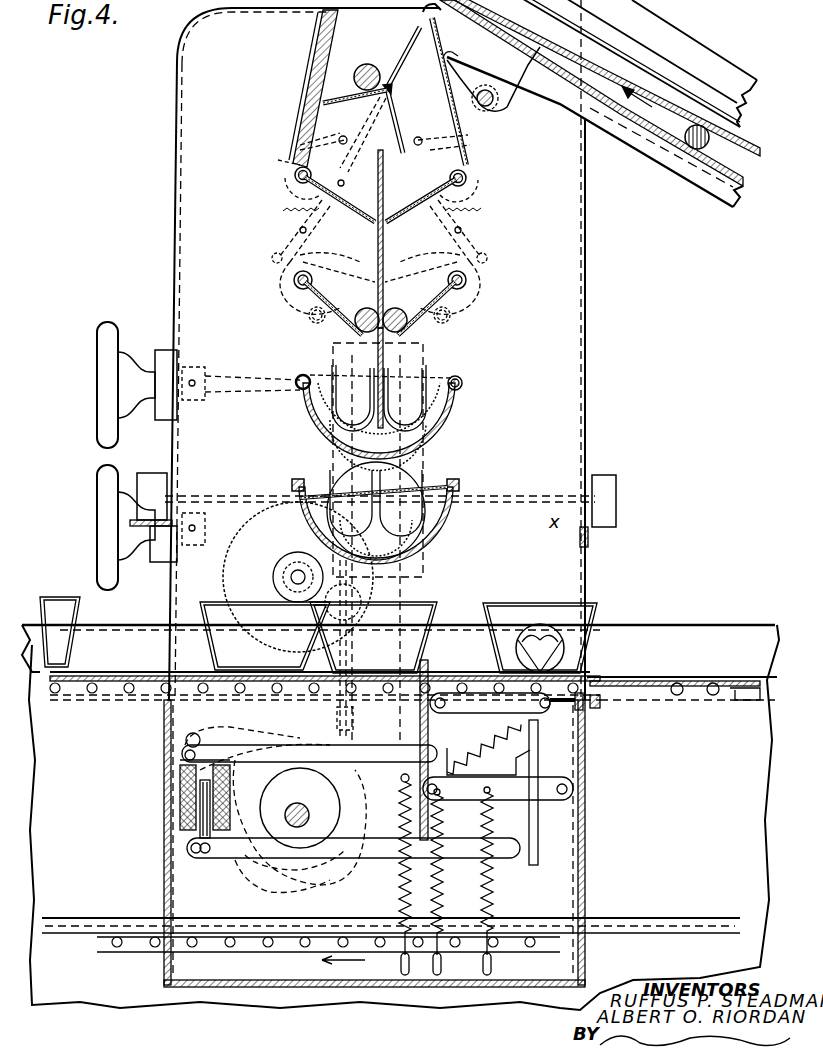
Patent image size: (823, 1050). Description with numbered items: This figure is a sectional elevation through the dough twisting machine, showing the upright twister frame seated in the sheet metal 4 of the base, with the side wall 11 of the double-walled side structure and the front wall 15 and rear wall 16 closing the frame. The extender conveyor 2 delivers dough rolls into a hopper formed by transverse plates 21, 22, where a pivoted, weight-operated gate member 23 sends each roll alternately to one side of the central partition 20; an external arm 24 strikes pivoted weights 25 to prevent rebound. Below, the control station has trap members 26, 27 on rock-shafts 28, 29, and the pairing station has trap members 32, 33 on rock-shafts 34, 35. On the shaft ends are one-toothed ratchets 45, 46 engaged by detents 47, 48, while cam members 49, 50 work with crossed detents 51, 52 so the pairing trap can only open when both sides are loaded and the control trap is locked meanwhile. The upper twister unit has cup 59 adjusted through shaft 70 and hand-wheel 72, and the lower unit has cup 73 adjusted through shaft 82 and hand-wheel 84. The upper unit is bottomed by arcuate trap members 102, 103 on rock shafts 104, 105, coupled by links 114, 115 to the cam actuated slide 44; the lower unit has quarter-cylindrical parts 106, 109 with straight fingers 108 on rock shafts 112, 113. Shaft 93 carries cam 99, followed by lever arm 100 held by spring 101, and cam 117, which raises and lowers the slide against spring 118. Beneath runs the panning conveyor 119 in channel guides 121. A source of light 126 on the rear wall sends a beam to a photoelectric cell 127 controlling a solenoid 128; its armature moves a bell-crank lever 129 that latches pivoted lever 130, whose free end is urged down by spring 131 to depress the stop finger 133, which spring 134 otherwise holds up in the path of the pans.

The extender conveyor 2 is at (678, 180).
The sheet metal 4 is at (760, 840).
The side wall 11 is at (200, 134).
The front wall 15 is at (180, 236).
The rear wall 16 is at (590, 272).
The central partition 20 is at (375, 176).
The transverse plate 21 is at (322, 52).
The transverse plate 22 is at (465, 132).
The gate member 23 is at (410, 40).
The external arm 24 is at (322, 108).
The pivoted weights 25 is at (300, 142).
The trap member 26 is at (370, 224).
The trap member 27 is at (392, 224).
The rock-shaft 28 is at (295, 178).
The rock-shaft 29 is at (468, 182).
The trap member 32 is at (355, 326).
The trap member 33 is at (410, 328).
The rock-shaft 34 is at (294, 283).
The rock-shaft 35 is at (468, 283).
The cam actuated slide 44 is at (423, 577).
The one-toothed ratchet 45 is at (278, 160).
The one-toothed ratchet 46 is at (480, 170).
The detent 47 is at (300, 222).
The detent 48 is at (470, 238).
The cam member 49 is at (300, 268).
The cam member 50 is at (480, 292).
The detent 51 is at (272, 252).
The detent 52 is at (490, 262).
The cup 59 is at (428, 398).
The shaft 70 is at (236, 378).
The hand-wheel 72 is at (108, 322).
The cup 73 is at (380, 480).
The shaft 82 is at (222, 540).
The hand-wheel 84 is at (118, 518).
The shaft 93 is at (298, 805).
The cam 99 is at (250, 870).
The lever arm 100 is at (268, 732).
The spring 101 is at (470, 790).
The trap member 102 is at (320, 420).
The trap member 103 is at (452, 432).
The rock shaft 104 is at (300, 390).
The rock shaft 105 is at (465, 380).
The quarter-cylindrical part 106 is at (450, 522).
The straight fingers 108 is at (290, 485).
The quarter-cylindrical part 109 is at (272, 582).
The rock shaft 112 is at (460, 485).
The rock shaft 113 is at (290, 484).
The link 114 is at (300, 376).
The link 115 is at (440, 368).
The cam 117 is at (395, 860).
The spring 118 is at (400, 880).
The panning conveyor 119 is at (672, 705).
The channel guides 121 is at (655, 705).
The source of light 126 is at (616, 495).
The photoelectric cell 127 is at (158, 473).
The solenoid 128 is at (178, 792).
The bell-crank lever 129 is at (510, 848).
The pivoted lever 130 is at (462, 748).
The spring 131 is at (505, 900).
The stop finger 133 is at (430, 676).
The spring 134 is at (538, 740).